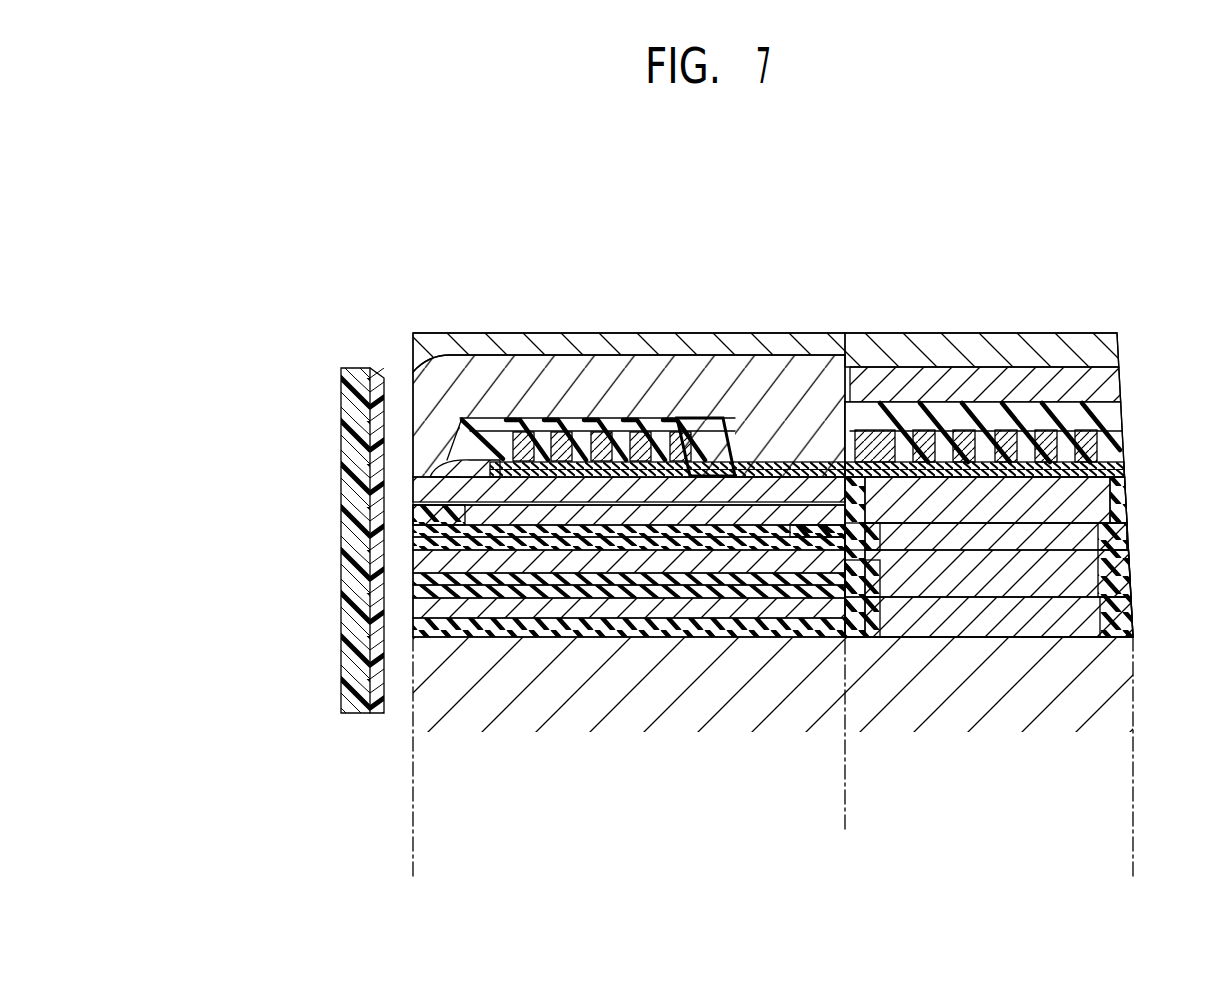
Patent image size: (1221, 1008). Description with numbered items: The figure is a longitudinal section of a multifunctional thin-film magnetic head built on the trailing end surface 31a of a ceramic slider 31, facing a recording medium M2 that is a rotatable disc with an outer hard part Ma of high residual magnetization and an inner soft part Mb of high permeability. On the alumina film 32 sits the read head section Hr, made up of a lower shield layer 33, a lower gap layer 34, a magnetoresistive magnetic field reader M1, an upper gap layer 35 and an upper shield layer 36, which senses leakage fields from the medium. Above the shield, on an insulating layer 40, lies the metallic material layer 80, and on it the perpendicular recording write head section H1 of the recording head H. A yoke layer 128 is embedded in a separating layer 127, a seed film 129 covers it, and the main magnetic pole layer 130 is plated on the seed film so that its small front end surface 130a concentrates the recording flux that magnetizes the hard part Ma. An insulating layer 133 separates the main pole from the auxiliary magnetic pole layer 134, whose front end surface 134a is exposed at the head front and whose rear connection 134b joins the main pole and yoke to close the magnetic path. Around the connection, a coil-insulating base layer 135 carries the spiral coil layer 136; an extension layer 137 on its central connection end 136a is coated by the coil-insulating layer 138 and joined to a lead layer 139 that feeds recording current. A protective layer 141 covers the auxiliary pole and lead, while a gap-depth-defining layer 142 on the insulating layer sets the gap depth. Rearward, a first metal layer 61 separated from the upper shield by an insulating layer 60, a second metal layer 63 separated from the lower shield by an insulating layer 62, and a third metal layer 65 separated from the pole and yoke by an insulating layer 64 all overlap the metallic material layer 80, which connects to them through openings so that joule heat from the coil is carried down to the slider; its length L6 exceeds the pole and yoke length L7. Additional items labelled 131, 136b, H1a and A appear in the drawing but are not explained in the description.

The slider 31 is at (950, 700).
The trailing end surface 31a is at (540, 640).
The Al2O3 film 32 is at (430, 626).
The lower shield layer 33 is at (430, 592).
The lower gap layer 34 is at (612, 606).
The upper gap layer 35 is at (664, 560).
The upper shield layer 36 is at (430, 562).
The insulating layer 40 is at (430, 541).
The insulating layer 60 is at (890, 590).
The first metal layer 61 is at (1045, 615).
The insulating layer 62 is at (855, 600).
The second metal layer 63 is at (985, 575).
The insulating layer 64 is at (920, 548).
The third metal layer 65 is at (1100, 505).
The metallic material layer 80 is at (440, 555).
The separating layer 127 is at (458, 537).
The yoke layer 128 is at (810, 540).
The seed film 129 is at (470, 515).
The main magnetic pole layer 130 is at (430, 490).
The front end surface of main magnetic pole layer 130a is at (411, 483).
The upper yoke layer 131 is at (1100, 355).
The insulating layer 133 is at (411, 440).
The auxiliary magnetic pole layer 134 is at (660, 385).
The front end surface of auxiliary magnetic pole layer 134a is at (411, 377).
The connection 134b is at (762, 390).
The coil-insulating base layer 135 is at (556, 430).
The coil layer 136 is at (1043, 192).
The connection end 136a is at (612, 425).
The coil winding portion 136b is at (1025, 410).
The extension layer 137 is at (858, 380).
The coil-insulating layer 138 is at (470, 418).
The lead layer 139 is at (852, 395).
The protective layer 141 is at (525, 345).
The gap-depth-defining layer 142 is at (424, 345).
The perpendicular magnetic recording head H is at (720, 348).
The write head section H1 is at (1140, 333).
The height H1a is at (413, 427).
The read head section Hr is at (1145, 560).
The length of metallic material layer L6 is at (773, 884).
The length of main magnetic pole layer and yoke layer L7 is at (413, 815).
The magnetic field reader M1 is at (430, 579).
The recording medium M2 is at (384, 722).
The hard part Ma is at (340, 706).
The soft part Mb is at (350, 677).
The medium travel direction A is at (283, 768).